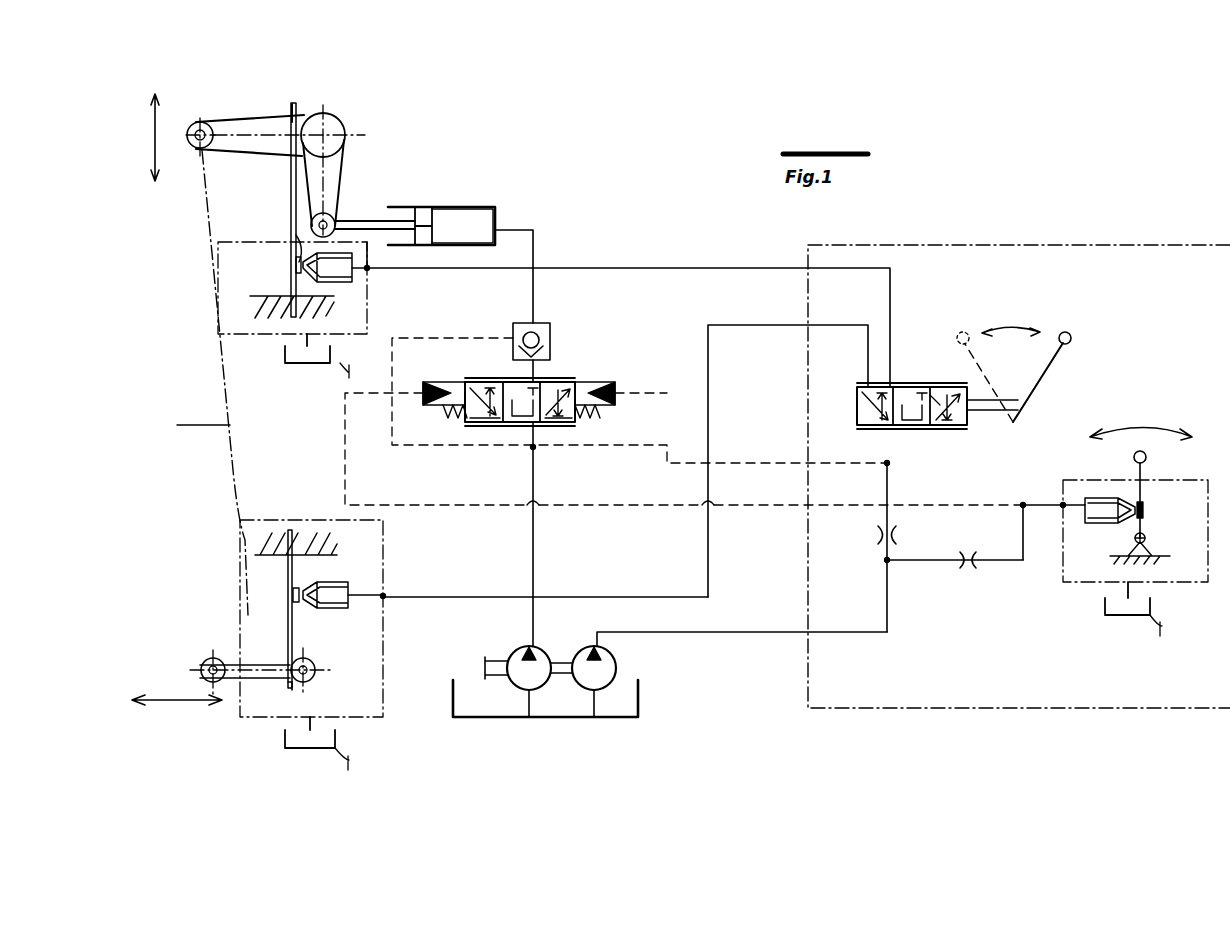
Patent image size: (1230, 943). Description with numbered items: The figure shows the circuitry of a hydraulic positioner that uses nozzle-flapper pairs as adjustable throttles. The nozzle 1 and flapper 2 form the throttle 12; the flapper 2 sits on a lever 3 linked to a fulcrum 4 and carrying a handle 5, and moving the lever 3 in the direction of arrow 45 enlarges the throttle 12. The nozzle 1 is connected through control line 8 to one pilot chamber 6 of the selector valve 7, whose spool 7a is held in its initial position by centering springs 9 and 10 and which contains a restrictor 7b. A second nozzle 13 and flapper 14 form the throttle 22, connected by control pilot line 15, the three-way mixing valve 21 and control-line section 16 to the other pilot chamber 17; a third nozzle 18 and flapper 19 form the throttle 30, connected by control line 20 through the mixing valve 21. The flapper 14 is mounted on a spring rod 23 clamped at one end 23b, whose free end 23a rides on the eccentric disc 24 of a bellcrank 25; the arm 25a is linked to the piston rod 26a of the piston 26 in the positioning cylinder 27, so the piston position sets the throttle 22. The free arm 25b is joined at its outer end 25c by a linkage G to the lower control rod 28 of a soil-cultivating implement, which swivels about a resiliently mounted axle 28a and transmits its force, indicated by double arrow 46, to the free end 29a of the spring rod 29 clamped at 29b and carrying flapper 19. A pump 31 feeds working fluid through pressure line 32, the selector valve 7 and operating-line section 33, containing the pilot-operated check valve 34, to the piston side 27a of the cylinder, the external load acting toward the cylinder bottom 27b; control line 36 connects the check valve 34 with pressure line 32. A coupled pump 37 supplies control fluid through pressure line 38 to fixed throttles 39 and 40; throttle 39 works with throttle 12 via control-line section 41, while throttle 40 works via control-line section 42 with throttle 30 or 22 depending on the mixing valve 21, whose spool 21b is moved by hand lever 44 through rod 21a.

The nozzle 1 is at (1112, 522).
The flapper 2 is at (1144, 508).
The lever 3 is at (1147, 536).
The fulcrum 4 is at (1152, 553).
The handle 5 is at (1146, 458).
The pilot chamber 6 is at (450, 384).
The selector valve 7 is at (510, 438).
The spool 7a is at (474, 424).
The restrictor 7b is at (549, 424).
The control line 8 is at (618, 507).
The centering spring 9 is at (445, 420).
The centering spring 10 is at (592, 420).
The throttle 12 is at (1137, 508).
The nozzle 13 is at (333, 280).
The flapper 14 is at (296, 265).
The control pilot line 15 is at (646, 268).
The control-line section 16 is at (750, 466).
The pilot chamber 17 is at (597, 386).
The nozzle 18 is at (336, 600).
The flapper 19 is at (293, 595).
The control line 20 is at (430, 596).
The mixing valve 21 is at (928, 440).
The rod 21a is at (985, 412).
The spool 21b is at (940, 393).
The throttle 22 is at (296, 245).
The spring rod 23 is at (291, 183).
The free end 23a is at (291, 114).
The clamped end 23b is at (285, 305).
The eccentric disc 24 is at (318, 113).
The bellcrank 25 is at (349, 126).
The bellcrank arm 25a is at (332, 180).
The free arm 25b is at (232, 127).
The outer end 25c is at (200, 150).
The piston 26 is at (425, 215).
The piston rod 26a is at (370, 220).
The positioning cylinder 27 is at (474, 198).
The piston side 27a is at (487, 218).
The cylinder bottom 27b is at (495, 240).
The lower control rod 28 is at (266, 680).
The axle 28a is at (318, 666).
The spring rod 29 is at (288, 634).
The free end 29a is at (293, 690).
The clamped end 29b is at (240, 490).
The throttle 30 is at (310, 583).
The pump 31 is at (510, 658).
The pressure line 32 is at (535, 578).
The operating-line section 33 is at (535, 248).
The pilot-operated check valve 34 is at (550, 333).
The control line 36 is at (639, 389).
The pump 37 is at (615, 670).
The pressure line 38 is at (735, 634).
The fixed throttle 39 is at (970, 568).
The fixed throttle 40 is at (878, 537).
The control-line section 41 is at (1023, 562).
The control-line section 42 is at (888, 505).
The hand lever 44 is at (1045, 374).
The arrow 45 is at (1152, 425).
The double arrow 46 is at (175, 700).
The linkage G is at (194, 426).